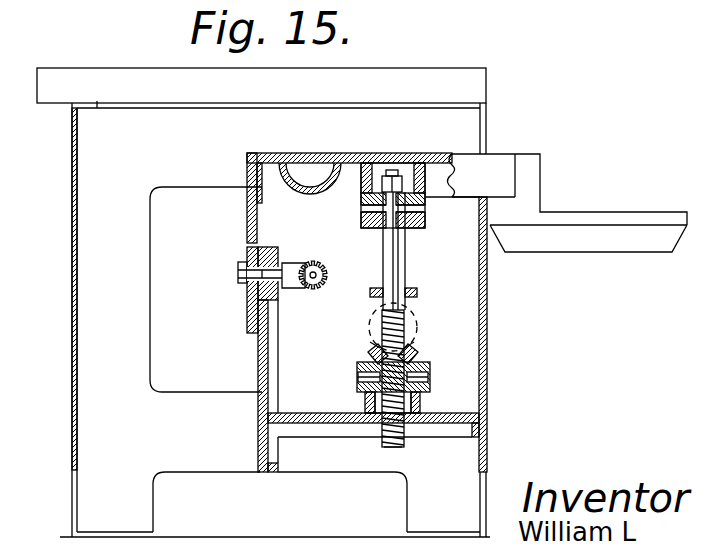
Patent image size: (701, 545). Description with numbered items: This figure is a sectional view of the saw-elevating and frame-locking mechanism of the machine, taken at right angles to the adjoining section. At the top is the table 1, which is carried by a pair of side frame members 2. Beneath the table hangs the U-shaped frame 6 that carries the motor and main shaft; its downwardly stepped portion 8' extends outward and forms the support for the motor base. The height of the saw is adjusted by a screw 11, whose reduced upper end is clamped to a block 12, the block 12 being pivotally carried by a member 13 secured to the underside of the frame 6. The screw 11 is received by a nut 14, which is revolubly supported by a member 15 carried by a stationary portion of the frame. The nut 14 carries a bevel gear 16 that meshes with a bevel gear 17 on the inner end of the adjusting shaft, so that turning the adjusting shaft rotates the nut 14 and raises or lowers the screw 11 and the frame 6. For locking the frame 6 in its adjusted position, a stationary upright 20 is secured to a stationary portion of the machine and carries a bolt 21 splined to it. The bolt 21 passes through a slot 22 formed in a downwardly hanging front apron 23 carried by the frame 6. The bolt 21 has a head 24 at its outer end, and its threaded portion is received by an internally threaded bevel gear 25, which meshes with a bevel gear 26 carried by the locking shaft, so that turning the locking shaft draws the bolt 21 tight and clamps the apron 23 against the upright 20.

The table 1 is at (121, 76).
The side frame members 2 is at (95, 190).
The U-shaped frame 6 is at (397, 154).
The downwardly stepped portion 8' is at (567, 203).
The screw 11 is at (393, 455).
The block 12 is at (418, 226).
The member 13 is at (362, 182).
The nut 14 is at (418, 358).
The member 15 is at (432, 402).
The bevel gear 16 is at (229, 273).
The bevel gear 17 is at (427, 323).
The stationary upright 20 is at (259, 371).
The bolt 21 is at (247, 287).
The slot 22 is at (256, 303).
The front apron 23 is at (253, 210).
The head 24 is at (240, 281).
The internally threaded bevel gear 25 is at (304, 266).
The bevel gear 26 is at (323, 291).